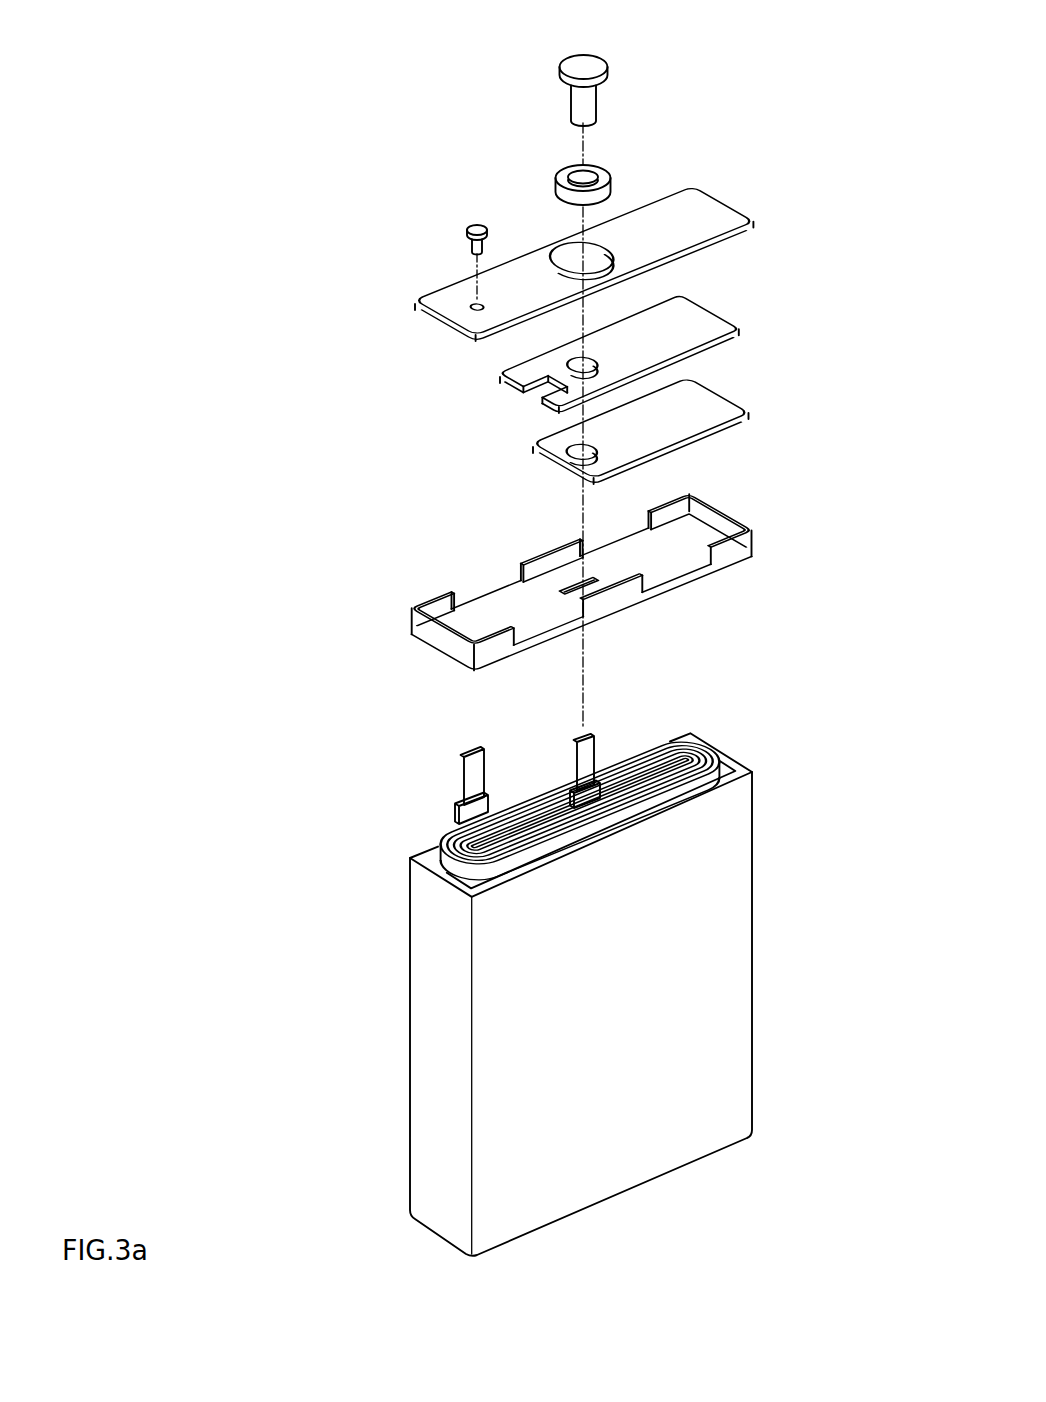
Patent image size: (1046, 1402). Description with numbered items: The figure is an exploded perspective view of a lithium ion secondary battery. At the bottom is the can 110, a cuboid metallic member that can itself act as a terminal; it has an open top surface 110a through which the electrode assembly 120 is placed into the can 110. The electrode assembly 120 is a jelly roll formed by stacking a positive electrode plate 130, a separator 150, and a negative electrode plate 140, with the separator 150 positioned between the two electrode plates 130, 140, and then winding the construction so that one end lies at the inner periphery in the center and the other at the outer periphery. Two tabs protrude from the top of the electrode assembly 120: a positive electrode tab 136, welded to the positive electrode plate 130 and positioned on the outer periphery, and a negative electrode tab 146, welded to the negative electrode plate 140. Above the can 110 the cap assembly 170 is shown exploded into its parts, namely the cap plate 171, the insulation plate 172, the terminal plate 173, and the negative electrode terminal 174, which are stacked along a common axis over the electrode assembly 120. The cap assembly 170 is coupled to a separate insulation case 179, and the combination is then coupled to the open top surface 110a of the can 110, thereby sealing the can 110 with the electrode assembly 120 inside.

The can 110 is at (735, 863).
The open top surface 110a is at (733, 770).
The electrode assembly 120 is at (621, 740).
The positive electrode plate 130 is at (689, 740).
The positive electrode tab 136 is at (473, 783).
The negative electrode plate 140 is at (716, 753).
The negative electrode tab 146 is at (587, 758).
The separator 150 is at (702, 744).
The cap assembly 170 is at (332, 238).
The cap plate 171 is at (437, 312).
The insulation plate 172 is at (518, 365).
The terminal plate 173 is at (533, 448).
The negative electrode terminal 174 is at (557, 72).
The insulation case 179 is at (495, 590).